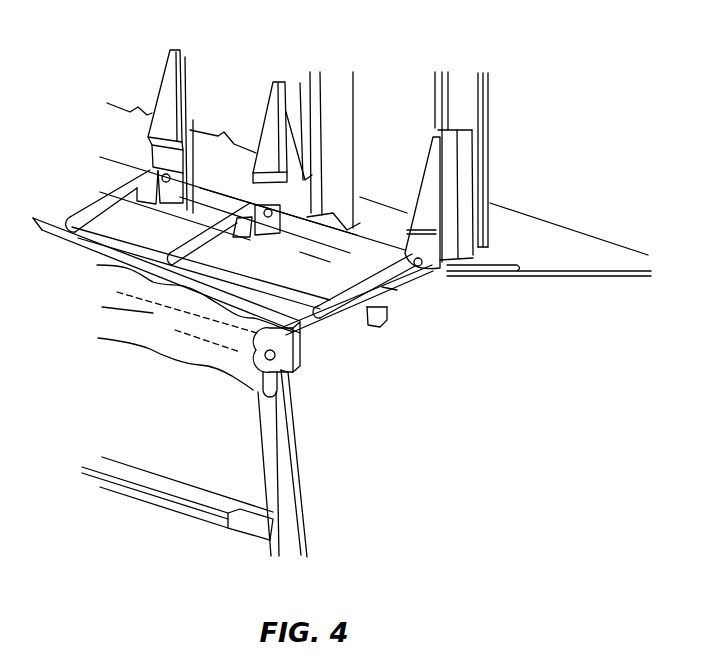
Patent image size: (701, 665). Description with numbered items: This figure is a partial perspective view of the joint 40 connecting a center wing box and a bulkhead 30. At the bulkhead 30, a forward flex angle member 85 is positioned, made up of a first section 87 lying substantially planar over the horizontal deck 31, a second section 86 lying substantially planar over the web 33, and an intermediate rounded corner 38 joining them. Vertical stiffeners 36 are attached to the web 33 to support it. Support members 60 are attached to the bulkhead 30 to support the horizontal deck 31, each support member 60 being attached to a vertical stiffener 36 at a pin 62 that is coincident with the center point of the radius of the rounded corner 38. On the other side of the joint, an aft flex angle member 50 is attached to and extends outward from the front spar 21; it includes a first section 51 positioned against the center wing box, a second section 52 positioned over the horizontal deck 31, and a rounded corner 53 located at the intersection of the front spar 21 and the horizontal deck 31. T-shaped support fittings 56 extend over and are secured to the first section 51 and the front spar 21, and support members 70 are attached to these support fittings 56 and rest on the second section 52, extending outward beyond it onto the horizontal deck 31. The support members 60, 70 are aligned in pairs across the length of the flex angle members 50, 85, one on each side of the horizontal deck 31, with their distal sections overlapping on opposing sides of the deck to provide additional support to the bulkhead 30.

The front spar 21 is at (415, 127).
The bulkhead 30 is at (100, 413).
The horizontal deck 31 is at (187, 289).
The web 33 is at (227, 468).
The vertical stiffeners 36 is at (283, 497).
The rounded corner 38 is at (153, 313).
The hinge rail assembly 40 is at (393, 333).
The aft flex angle member 50 is at (427, 265).
The first section 51 is at (215, 205).
The second section 52 is at (328, 287).
The rounded corner 53 is at (194, 120).
The support fittings 56 is at (170, 110).
The support member 60 is at (318, 333).
The pin 62 is at (257, 352).
The support members 70 is at (130, 193).
The forward flex angle member 85 is at (165, 336).
The second section 86 is at (120, 299).
The first section 87 is at (190, 350).